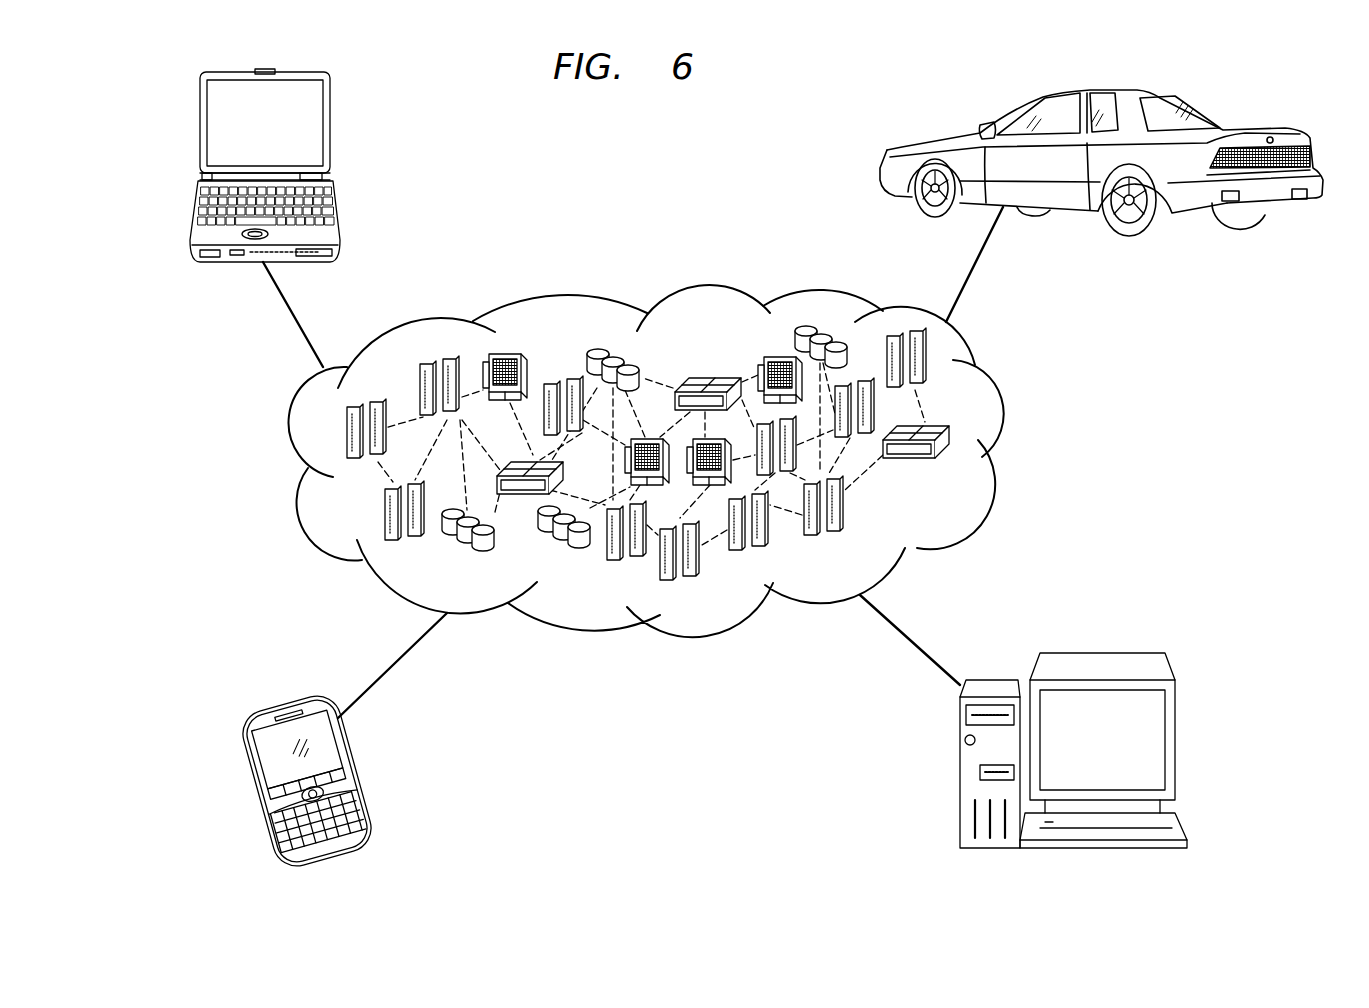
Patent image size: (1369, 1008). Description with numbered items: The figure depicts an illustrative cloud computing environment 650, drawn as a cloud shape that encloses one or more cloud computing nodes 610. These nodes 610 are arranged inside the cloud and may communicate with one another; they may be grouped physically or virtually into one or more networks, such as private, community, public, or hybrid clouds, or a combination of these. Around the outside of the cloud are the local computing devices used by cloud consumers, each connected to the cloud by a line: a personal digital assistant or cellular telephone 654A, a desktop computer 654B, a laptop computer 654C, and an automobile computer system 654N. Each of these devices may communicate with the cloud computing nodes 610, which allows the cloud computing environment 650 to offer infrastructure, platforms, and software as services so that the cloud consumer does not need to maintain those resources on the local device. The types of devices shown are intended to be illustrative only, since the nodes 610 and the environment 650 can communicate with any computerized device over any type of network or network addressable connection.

The cloud computing environment 650 is at (997, 383).
The cloud computing nodes 610 is at (952, 465).
The personal digital assistant (PDA) or cellular telephone 654A is at (247, 766).
The desktop computer 654B is at (1098, 652).
The laptop computer 654C is at (200, 118).
The automobile computer system 654N is at (1280, 130).